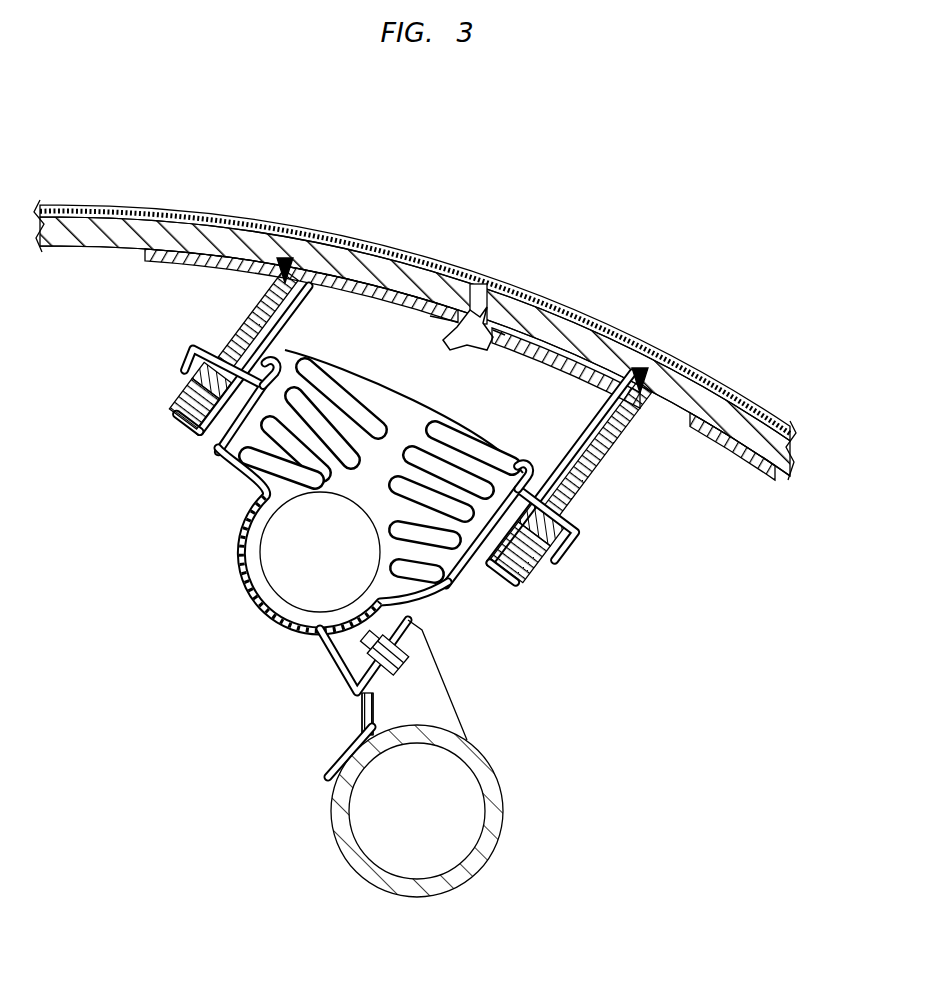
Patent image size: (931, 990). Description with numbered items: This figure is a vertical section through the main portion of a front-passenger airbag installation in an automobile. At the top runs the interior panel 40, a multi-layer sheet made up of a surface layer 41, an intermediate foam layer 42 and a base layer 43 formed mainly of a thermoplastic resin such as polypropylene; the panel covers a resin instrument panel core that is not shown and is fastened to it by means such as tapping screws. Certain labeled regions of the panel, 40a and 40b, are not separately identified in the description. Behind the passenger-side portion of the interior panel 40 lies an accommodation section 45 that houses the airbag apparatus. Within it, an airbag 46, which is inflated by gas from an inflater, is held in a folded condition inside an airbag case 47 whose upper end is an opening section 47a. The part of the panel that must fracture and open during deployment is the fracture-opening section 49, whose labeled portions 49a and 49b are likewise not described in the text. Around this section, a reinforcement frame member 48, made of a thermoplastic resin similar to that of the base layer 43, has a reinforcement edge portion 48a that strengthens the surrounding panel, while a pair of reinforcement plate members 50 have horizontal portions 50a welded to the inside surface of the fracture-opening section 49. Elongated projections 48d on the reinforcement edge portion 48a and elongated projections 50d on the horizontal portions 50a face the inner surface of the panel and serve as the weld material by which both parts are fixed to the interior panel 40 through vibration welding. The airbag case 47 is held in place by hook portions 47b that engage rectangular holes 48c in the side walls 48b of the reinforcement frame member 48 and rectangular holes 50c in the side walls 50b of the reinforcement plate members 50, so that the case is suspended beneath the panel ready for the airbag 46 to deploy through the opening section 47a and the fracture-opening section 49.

The interior panel 40 is at (415, 286).
The surface layer 41 is at (75, 207).
The intermediate foam layer 42 is at (100, 226).
The base layer 43 is at (140, 240).
The inner surface of panel 40a is at (268, 226).
The opening in panel 40b is at (477, 303).
The accommodation section 45 is at (228, 605).
The airbag 46 is at (280, 463).
The airbag case 47 is at (390, 544).
The opening section 47a is at (533, 463).
The hook portions 47b is at (275, 358).
The reinforcement frame member 48 is at (455, 360).
The reinforcement edge portion 48a is at (205, 272).
The side walls 48b is at (233, 332).
The rectangular holes 48c is at (194, 370).
The elongated projections 48d is at (190, 242).
The fracture-opening section 49 is at (481, 234).
The retainer first portion 49a is at (407, 250).
The retainer second portion 49b is at (528, 300).
The reinforcement plate members 50 is at (369, 362).
The horizontal portions 50a is at (488, 350).
The side walls 50b is at (223, 445).
The rectangular holes 50c is at (199, 410).
The elongated projections 50d is at (375, 290).